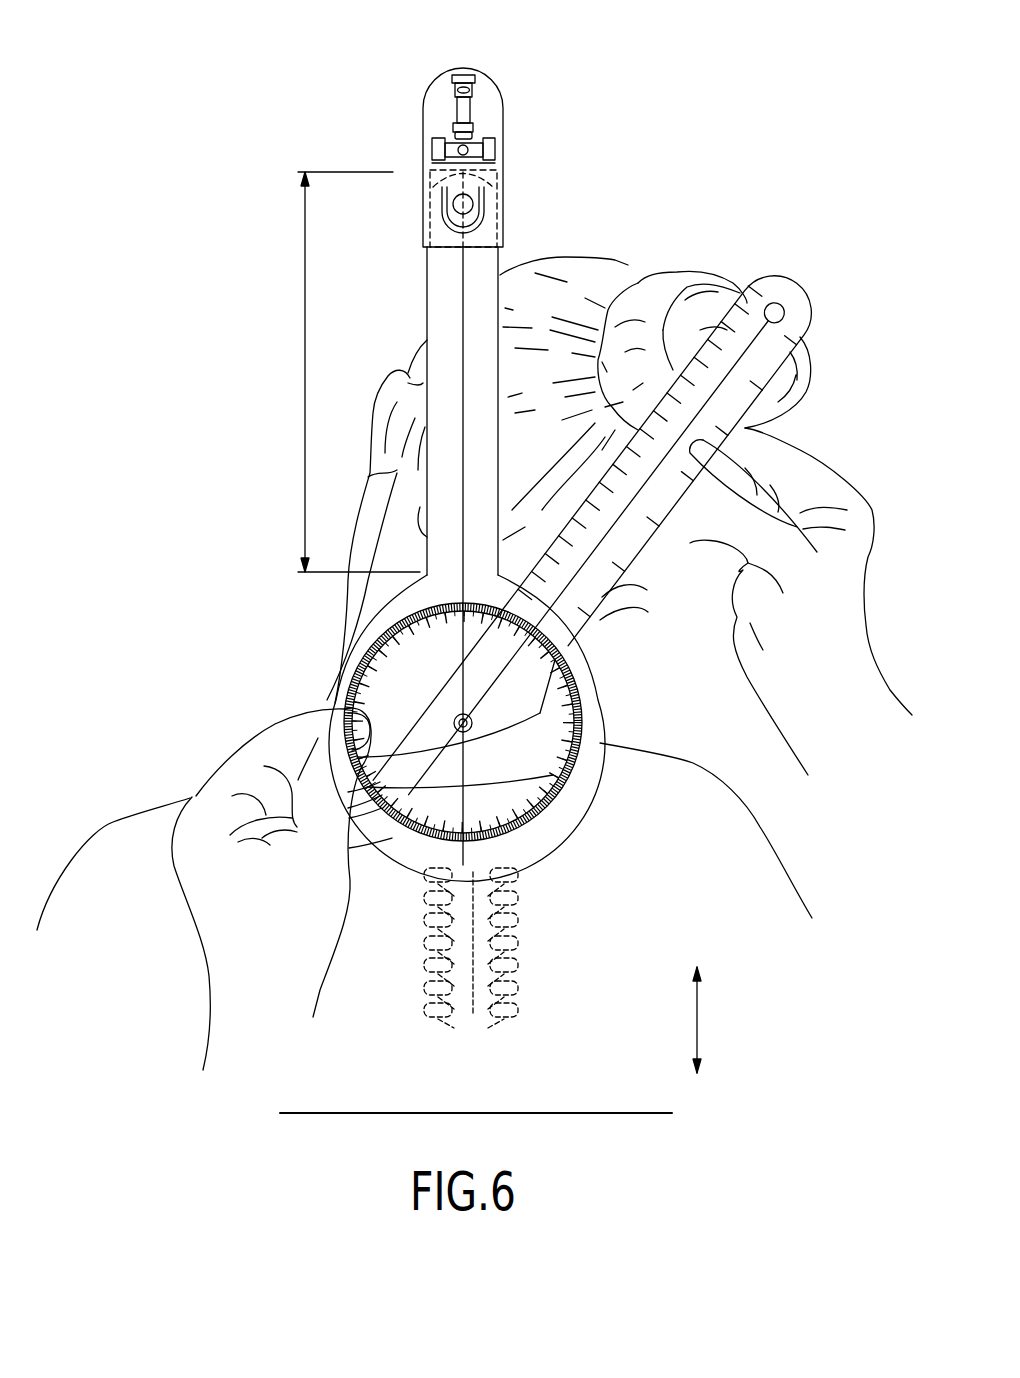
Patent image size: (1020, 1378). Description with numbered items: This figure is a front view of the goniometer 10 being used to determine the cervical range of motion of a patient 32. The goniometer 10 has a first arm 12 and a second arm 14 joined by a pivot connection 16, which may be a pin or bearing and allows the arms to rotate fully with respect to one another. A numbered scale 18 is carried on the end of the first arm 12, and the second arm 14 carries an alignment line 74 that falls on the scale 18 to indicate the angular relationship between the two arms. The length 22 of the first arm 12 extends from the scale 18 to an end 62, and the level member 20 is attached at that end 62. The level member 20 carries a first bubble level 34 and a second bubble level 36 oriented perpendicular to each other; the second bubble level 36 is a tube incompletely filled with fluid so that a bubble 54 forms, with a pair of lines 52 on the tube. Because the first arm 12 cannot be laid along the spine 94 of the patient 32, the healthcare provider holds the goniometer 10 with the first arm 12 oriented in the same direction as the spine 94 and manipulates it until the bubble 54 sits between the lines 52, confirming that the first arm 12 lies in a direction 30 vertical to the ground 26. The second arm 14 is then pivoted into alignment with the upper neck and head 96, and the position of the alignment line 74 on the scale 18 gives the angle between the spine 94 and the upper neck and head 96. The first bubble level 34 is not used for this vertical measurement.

The goniometer 10 is at (561, 471).
The first arm 12 is at (428, 305).
The second arm 14 is at (760, 375).
The pivot connection 16 is at (458, 720).
The scale 18 is at (467, 755).
The level member 20 is at (471, 126).
The length 22 is at (303, 370).
The ground 26 is at (326, 1110).
The direction 30 is at (698, 1018).
The patient 32 is at (747, 830).
The first bubble level 34 is at (452, 98).
The second bubble level 36 is at (445, 143).
The lines 52 is at (440, 152).
The bubble 54 is at (470, 143).
The end 62 is at (425, 180).
The alignment line 74 is at (612, 527).
The spine 94 is at (523, 912).
The upper neck and head 96 is at (627, 262).